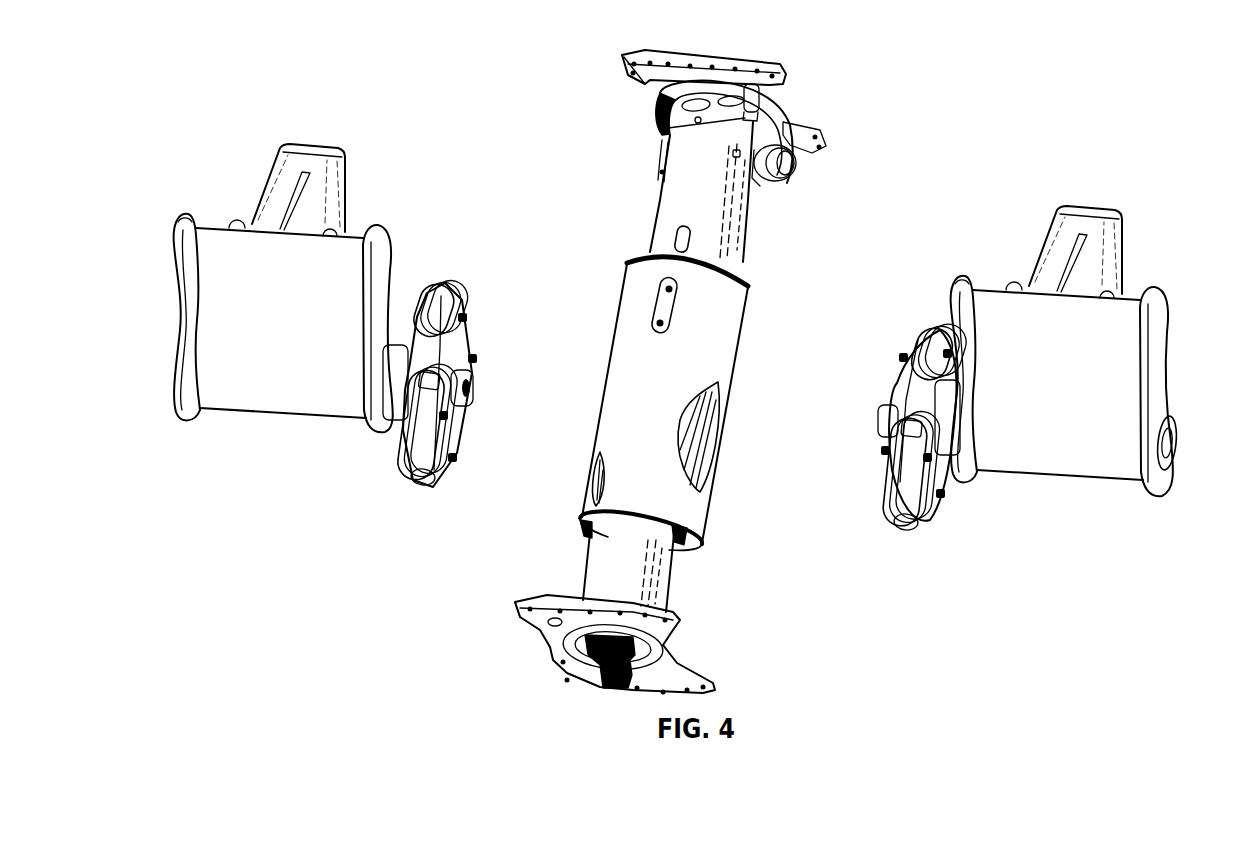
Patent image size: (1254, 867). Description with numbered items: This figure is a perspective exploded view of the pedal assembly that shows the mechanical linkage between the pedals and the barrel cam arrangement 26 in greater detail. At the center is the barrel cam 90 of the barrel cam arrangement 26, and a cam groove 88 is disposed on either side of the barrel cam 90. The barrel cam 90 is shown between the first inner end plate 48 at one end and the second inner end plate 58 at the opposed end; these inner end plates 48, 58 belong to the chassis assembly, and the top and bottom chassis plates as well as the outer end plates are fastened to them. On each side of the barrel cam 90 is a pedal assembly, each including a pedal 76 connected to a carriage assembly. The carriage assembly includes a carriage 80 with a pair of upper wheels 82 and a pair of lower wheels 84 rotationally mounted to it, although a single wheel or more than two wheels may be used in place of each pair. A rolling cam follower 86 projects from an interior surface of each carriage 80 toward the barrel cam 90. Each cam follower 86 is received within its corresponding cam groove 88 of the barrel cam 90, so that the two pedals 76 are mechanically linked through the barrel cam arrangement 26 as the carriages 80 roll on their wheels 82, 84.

The barrel cam arrangement 26 is at (790, 238).
The first inner end plate 48 is at (577, 678).
The second inner end plate 58 is at (743, 62).
The pedal 76 is at (211, 240).
The carriage 80 is at (473, 332).
The upper wheels 82 is at (430, 290).
The lower wheels 84 is at (418, 490).
The rolling cam follower 86 is at (466, 404).
The cam groove 88 is at (582, 484).
The barrel cam 90 is at (637, 291).